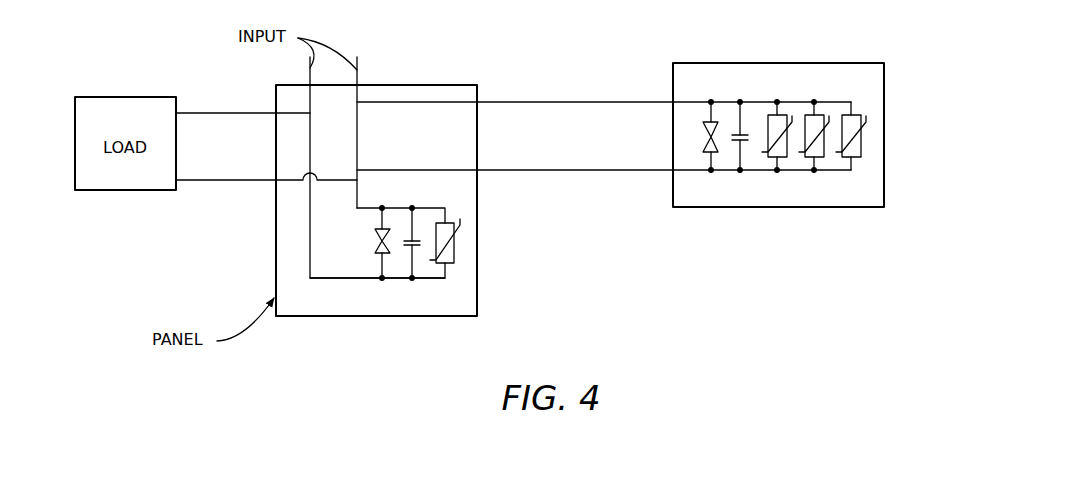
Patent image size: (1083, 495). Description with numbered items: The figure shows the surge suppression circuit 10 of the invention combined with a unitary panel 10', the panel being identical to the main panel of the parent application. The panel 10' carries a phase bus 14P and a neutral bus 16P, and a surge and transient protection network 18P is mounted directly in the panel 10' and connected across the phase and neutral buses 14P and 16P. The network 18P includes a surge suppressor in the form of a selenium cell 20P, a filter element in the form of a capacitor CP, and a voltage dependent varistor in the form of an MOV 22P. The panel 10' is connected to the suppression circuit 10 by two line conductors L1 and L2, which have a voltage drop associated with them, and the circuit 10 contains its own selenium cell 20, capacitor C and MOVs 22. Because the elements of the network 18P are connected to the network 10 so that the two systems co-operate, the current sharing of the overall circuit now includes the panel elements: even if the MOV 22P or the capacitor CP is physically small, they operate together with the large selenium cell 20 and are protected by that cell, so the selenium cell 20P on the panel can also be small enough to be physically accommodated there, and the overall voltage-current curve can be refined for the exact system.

The suppression circuit 10 is at (788, 133).
The panel 10' is at (397, 176).
The phase bus 14P is at (276, 155).
The neutral bus 16P is at (357, 142).
The surge and transient protection network 18P is at (462, 204).
The selenium cell 20P is at (380, 255).
The capacitor CP is at (417, 247).
The MOV 22P is at (457, 263).
The selenium cell 20 is at (707, 148).
The capacitor C is at (746, 135).
The MOV 22 is at (785, 155).
The line conductor L1 is at (555, 101).
The line conductor L2 is at (553, 170).